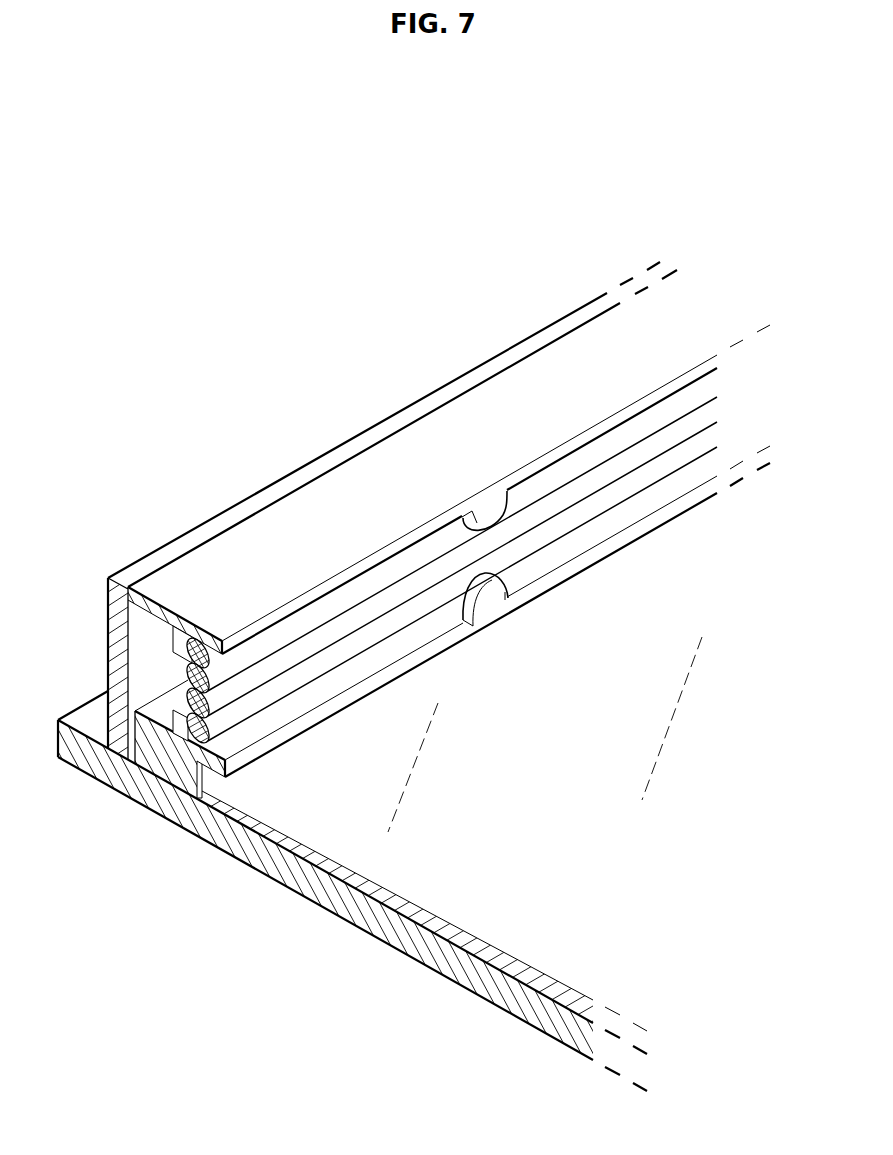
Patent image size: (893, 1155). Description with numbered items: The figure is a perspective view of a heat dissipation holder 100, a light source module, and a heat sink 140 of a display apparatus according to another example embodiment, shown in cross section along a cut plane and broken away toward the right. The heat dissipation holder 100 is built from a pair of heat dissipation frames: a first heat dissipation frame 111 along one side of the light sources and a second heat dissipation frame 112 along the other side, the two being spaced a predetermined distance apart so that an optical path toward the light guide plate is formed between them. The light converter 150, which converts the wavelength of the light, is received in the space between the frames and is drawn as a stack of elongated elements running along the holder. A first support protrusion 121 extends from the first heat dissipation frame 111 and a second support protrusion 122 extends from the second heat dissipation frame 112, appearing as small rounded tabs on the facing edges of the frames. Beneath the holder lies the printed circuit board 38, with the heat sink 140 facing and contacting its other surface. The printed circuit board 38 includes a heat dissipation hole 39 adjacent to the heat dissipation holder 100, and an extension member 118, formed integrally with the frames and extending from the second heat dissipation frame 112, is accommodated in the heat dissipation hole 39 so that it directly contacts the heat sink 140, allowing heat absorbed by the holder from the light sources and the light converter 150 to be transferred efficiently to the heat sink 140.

The heat dissipation holder 100 is at (680, 525).
The first heat dissipation frame 111 is at (577, 443).
The second heat dissipation frame 112 is at (617, 547).
The first support protrusion 121 is at (453, 513).
The second support protrusion 122 is at (492, 598).
The light converter 150 is at (258, 714).
The extension member 118 is at (163, 758).
The heat dissipation hole 39 is at (198, 780).
The printed circuit board 38 is at (423, 874).
The heat sink 140 is at (428, 955).